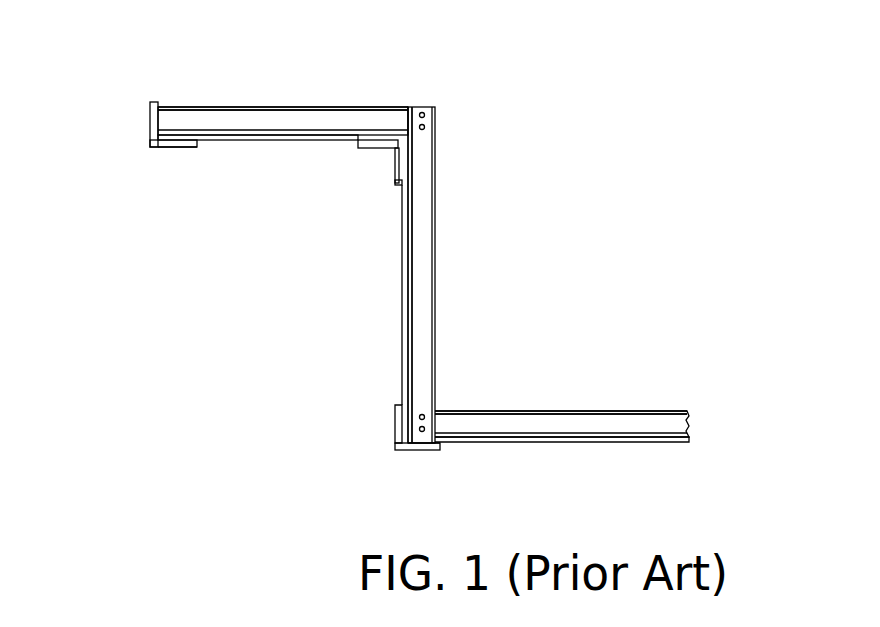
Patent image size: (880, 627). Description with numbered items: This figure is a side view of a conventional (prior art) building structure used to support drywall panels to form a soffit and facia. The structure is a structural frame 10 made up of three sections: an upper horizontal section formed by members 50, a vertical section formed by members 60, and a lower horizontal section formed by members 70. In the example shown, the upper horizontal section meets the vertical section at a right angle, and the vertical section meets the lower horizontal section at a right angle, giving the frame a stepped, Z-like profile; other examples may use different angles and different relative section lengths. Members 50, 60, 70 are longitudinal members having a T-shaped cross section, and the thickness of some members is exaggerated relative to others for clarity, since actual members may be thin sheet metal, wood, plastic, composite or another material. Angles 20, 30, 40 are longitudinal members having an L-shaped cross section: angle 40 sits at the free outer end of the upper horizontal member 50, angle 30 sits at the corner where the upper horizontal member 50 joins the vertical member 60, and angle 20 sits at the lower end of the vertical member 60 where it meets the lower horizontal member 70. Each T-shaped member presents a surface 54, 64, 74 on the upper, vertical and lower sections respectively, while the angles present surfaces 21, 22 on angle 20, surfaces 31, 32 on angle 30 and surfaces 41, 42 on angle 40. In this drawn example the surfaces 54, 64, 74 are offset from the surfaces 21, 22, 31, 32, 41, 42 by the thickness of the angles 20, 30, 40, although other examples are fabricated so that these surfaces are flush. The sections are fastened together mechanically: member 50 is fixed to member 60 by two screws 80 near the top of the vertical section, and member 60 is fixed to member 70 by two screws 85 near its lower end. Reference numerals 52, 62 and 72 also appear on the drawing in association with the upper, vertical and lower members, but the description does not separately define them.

The structural frame 10 is at (527, 108).
The angle 20 is at (408, 447).
The surface 21 is at (418, 450).
The surface 22 is at (400, 428).
The angle 30 is at (393, 170).
The surface 31 is at (398, 186).
The surface 32 is at (370, 150).
The angle 40 is at (157, 150).
The surface 41 is at (185, 148).
The surface 42 is at (150, 123).
The member 50 is at (316, 122).
The upper beam top flange 52 is at (380, 120).
The surface 54 is at (280, 141).
The member 60 is at (420, 268).
The column wall 62 is at (420, 227).
The surface 64 is at (403, 322).
The member 70 is at (597, 425).
The lower beam top flange 72 is at (545, 422).
The surface 74 is at (585, 438).
The screws 80 is at (425, 127).
The screws 85 is at (424, 428).